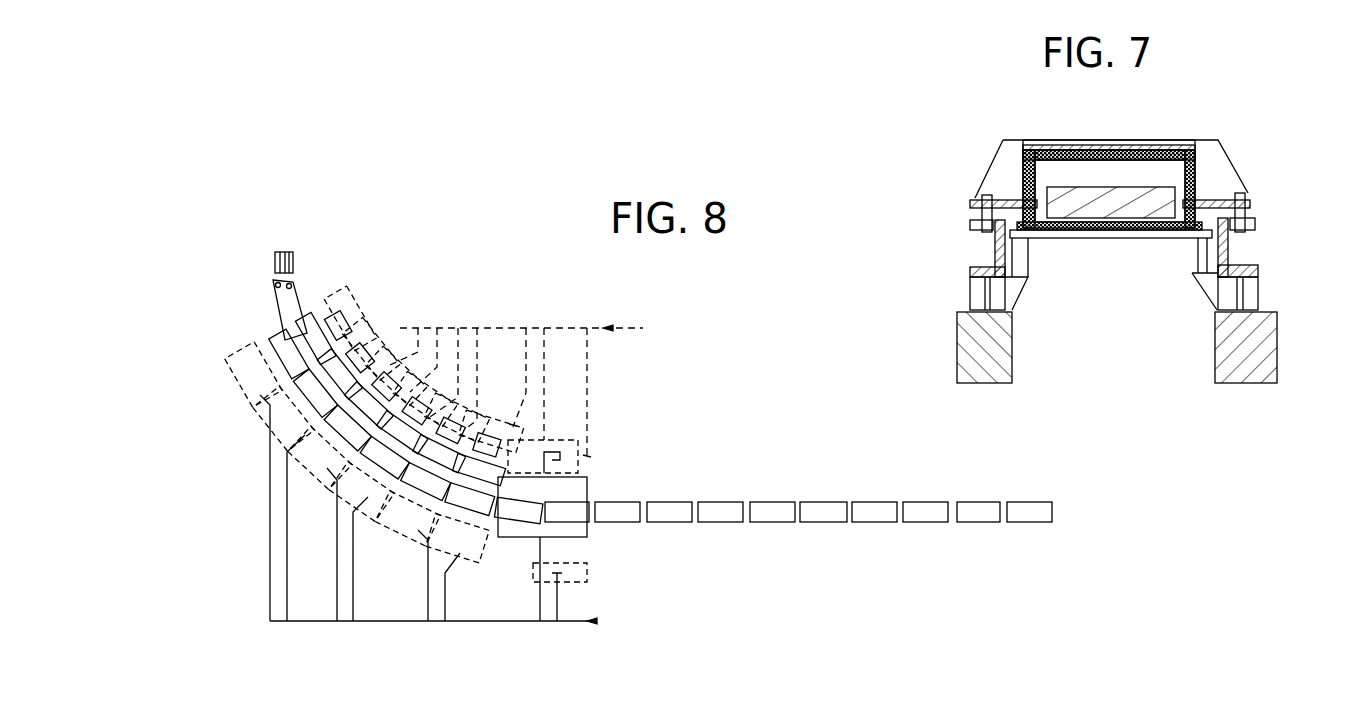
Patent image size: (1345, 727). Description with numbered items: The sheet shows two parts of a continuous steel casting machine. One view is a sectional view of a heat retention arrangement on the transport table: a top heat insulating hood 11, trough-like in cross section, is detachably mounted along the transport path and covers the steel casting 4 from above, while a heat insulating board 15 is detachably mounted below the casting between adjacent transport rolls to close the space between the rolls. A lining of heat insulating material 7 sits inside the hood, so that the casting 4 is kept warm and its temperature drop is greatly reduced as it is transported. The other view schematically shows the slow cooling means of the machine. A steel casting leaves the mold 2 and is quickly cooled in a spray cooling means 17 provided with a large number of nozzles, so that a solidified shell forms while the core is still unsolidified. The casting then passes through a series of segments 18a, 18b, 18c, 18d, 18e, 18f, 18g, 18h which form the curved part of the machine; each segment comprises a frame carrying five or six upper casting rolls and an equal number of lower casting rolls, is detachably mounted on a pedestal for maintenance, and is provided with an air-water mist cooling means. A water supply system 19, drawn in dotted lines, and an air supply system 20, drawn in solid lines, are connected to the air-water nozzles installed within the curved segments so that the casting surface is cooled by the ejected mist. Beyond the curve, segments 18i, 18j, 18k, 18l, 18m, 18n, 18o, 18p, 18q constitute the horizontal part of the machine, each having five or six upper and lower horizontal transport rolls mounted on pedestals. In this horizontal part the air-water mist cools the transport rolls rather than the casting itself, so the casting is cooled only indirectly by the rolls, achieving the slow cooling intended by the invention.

In FIG. 8, the mold 2 is at (272, 260).
In FIG. 7, the steel casting 4 is at (1094, 203).
In FIG. 7, the heat insulating material 7 is at (1133, 147).
In FIG. 7, the top heat insulating hood 11 is at (1070, 147).
In FIG. 7, the heat insulating board 15 is at (1140, 234).
In FIG. 8, the spray cooling means 17 is at (280, 302).
In FIG. 8, the segment 18a is at (290, 350).
In FIG. 8, the segment 18b is at (325, 385).
In FIG. 8, the segment 18c is at (340, 443).
In FIG. 8, the segment 18d is at (377, 477).
In FIG. 8, the segment 18e is at (421, 492).
In FIG. 8, the segment 18f is at (470, 510).
In FIG. 8, the segment 18g is at (523, 520).
In FIG. 8, the segment 18h is at (572, 518).
In FIG. 8, the segment 18i is at (617, 507).
In FIG. 8, the segment 18j is at (667, 508).
In FIG. 8, the segment 18k is at (722, 508).
In FIG. 8, the segment 18l is at (767, 508).
In FIG. 8, the segment 18m is at (820, 508).
In FIG. 8, the segment 18n is at (873, 507).
In FIG. 8, the segment 18o is at (925, 508).
In FIG. 8, the segment 18p is at (973, 508).
In FIG. 8, the segment 18q is at (1023, 507).
In FIG. 8, the water supply system 19 is at (495, 328).
In FIG. 8, the air supply system 20 is at (307, 622).